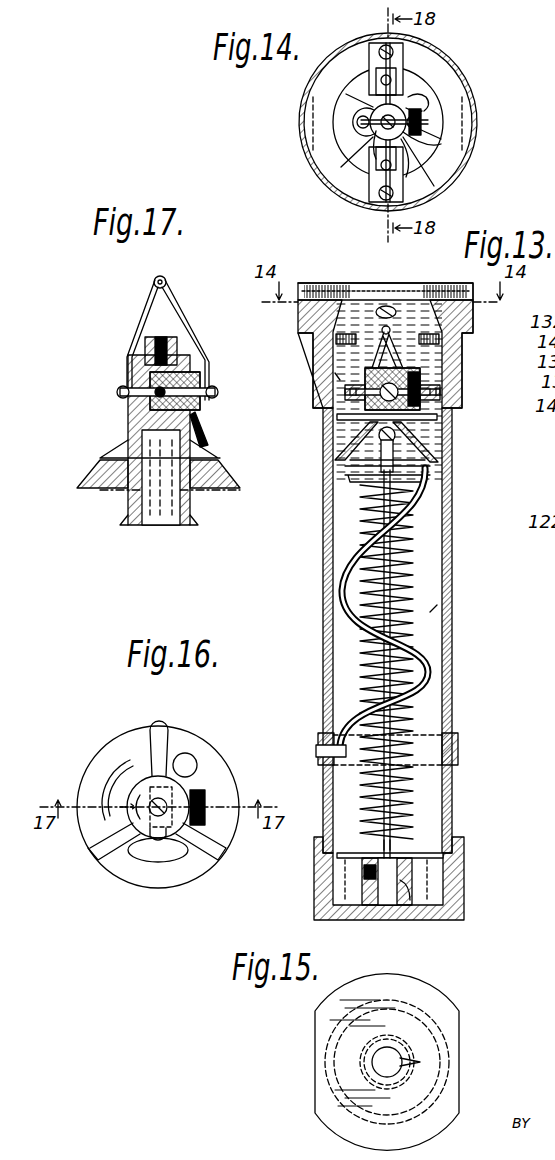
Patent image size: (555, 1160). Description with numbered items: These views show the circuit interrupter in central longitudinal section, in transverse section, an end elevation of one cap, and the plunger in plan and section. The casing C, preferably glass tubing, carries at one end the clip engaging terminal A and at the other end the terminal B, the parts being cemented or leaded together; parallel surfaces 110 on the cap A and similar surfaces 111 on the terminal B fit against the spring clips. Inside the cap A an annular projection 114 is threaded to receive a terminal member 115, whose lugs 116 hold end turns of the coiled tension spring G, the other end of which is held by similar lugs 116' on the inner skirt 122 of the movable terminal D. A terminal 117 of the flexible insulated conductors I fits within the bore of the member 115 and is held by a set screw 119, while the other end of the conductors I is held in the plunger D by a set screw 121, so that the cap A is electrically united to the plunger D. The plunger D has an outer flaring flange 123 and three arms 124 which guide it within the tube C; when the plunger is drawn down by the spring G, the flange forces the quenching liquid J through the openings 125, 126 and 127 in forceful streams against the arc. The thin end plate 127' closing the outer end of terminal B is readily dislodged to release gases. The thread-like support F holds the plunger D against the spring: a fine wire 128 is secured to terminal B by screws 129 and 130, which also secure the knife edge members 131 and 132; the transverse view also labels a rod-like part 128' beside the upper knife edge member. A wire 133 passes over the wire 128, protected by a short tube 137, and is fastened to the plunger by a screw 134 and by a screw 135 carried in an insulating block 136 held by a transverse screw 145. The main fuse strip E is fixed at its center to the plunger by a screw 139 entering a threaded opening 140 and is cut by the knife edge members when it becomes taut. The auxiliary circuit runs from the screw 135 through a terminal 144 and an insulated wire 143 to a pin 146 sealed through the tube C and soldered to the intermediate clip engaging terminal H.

In FIG. 13, the parallel surfaces 110 is at (316, 885).
In FIG. 15, the parallel surfaces 110 is at (315, 1040).
In FIG. 14, the surfaces 111 is at (463, 107).
In FIG. 13, the surfaces 111 is at (313, 368).
In FIG. 13, the annular projection 114 is at (414, 906).
In FIG. 13, the terminal member 115 is at (415, 882).
In FIG. 13, the lugs 116 is at (386, 854).
In FIG. 15, the lugs 116 is at (387, 1063).
In FIG. 13, the lugs 116' is at (391, 484).
In FIG. 17, the lugs 116' is at (157, 517).
In FIG. 16, the lugs 116' is at (83, 791).
In FIG. 13, the terminal 117 is at (384, 906).
In FIG. 13, the set screw 119 is at (355, 906).
In FIG. 13, the set screw 121 is at (352, 438).
In FIG. 13, the inner skirt 122 is at (360, 466).
In FIG. 17, the inner skirt 122 is at (135, 528).
In FIG. 17, the outer flaring flange 123 is at (100, 472).
In FIG. 16, the outer flaring flange 123 is at (126, 735).
In FIG. 13, the arms 124 is at (355, 417).
In FIG. 16, the arms 124 is at (166, 735).
In FIG. 14, the opening 125 is at (364, 108).
In FIG. 17, the opening 125 is at (110, 456).
In FIG. 16, the opening 125 is at (118, 760).
In FIG. 14, the opening 126 is at (419, 176).
In FIG. 16, the opening 126 is at (160, 856).
In FIG. 14, the opening 127 is at (460, 81).
In FIG. 16, the opening 127 is at (208, 747).
In FIG. 13, the end plate 127' is at (375, 287).
In FIG. 17, the fine wire 128 is at (128, 277).
In FIG. 14, the rod 128' is at (435, 104).
In FIG. 14, the screw 129 is at (388, 45).
In FIG. 14, the screw 130 is at (381, 203).
In FIG. 14, the knife edge member 131 is at (369, 44).
In FIG. 13, the knife edge member 131 is at (393, 330).
In FIG. 14, the knife edge member 132 is at (371, 190).
In FIG. 13, the wire 133 is at (325, 318).
In FIG. 17, the wire 133 is at (143, 318).
In FIG. 13, the screw 134 is at (345, 392).
In FIG. 17, the screw 134 is at (118, 389).
In FIG. 13, the screw 135 is at (442, 386).
In FIG. 17, the screw 135 is at (214, 388).
In FIG. 14, the insulating block 136 is at (419, 118).
In FIG. 13, the insulating block 136 is at (440, 392).
In FIG. 17, the insulating block 136 is at (150, 402).
In FIG. 16, the insulating block 136 is at (200, 790).
In FIG. 14, the short tube 137 is at (373, 146).
In FIG. 17, the short tube 137 is at (168, 289).
In FIG. 13, the screw 139 is at (440, 336).
In FIG. 17, the threaded opening 140 is at (165, 340).
In FIG. 13, the insulated wire 143 is at (428, 662).
In FIG. 17, the terminal 144 is at (208, 418).
In FIG. 13, the transverse screw 145 is at (420, 421).
In FIG. 17, the transverse screw 145 is at (150, 372).
In FIG. 16, the transverse screw 145 is at (150, 846).
In FIG. 13, the pin 146 is at (320, 750).
In FIG. 13, the clip engaging terminal A is at (465, 913).
In FIG. 15, the clip engaging terminal A is at (435, 1005).
In FIG. 14, the clip engaging terminal B is at (445, 112).
In FIG. 13, the clip engaging terminal B is at (455, 370).
In FIG. 13, the casing C is at (453, 540).
In FIG. 14, the movable terminal D is at (426, 155).
In FIG. 13, the movable terminal D is at (335, 456).
In FIG. 17, the movable terminal D is at (195, 450).
In FIG. 16, the movable terminal D is at (125, 862).
In FIG. 14, the main fuse strip E is at (371, 112).
In FIG. 13, the main fuse strip E is at (318, 348).
In FIG. 14, the thread-like support F is at (405, 90).
In FIG. 13, the thread-like support F is at (400, 330).
In FIG. 17, the thread-like support F is at (166, 280).
In FIG. 13, the tension spring G is at (410, 712).
In FIG. 13, the intermediate clip engaging terminal H is at (458, 745).
In FIG. 13, the flexible insulated conductors I is at (360, 652).
In FIG. 13, the quenching liquid J is at (335, 373).